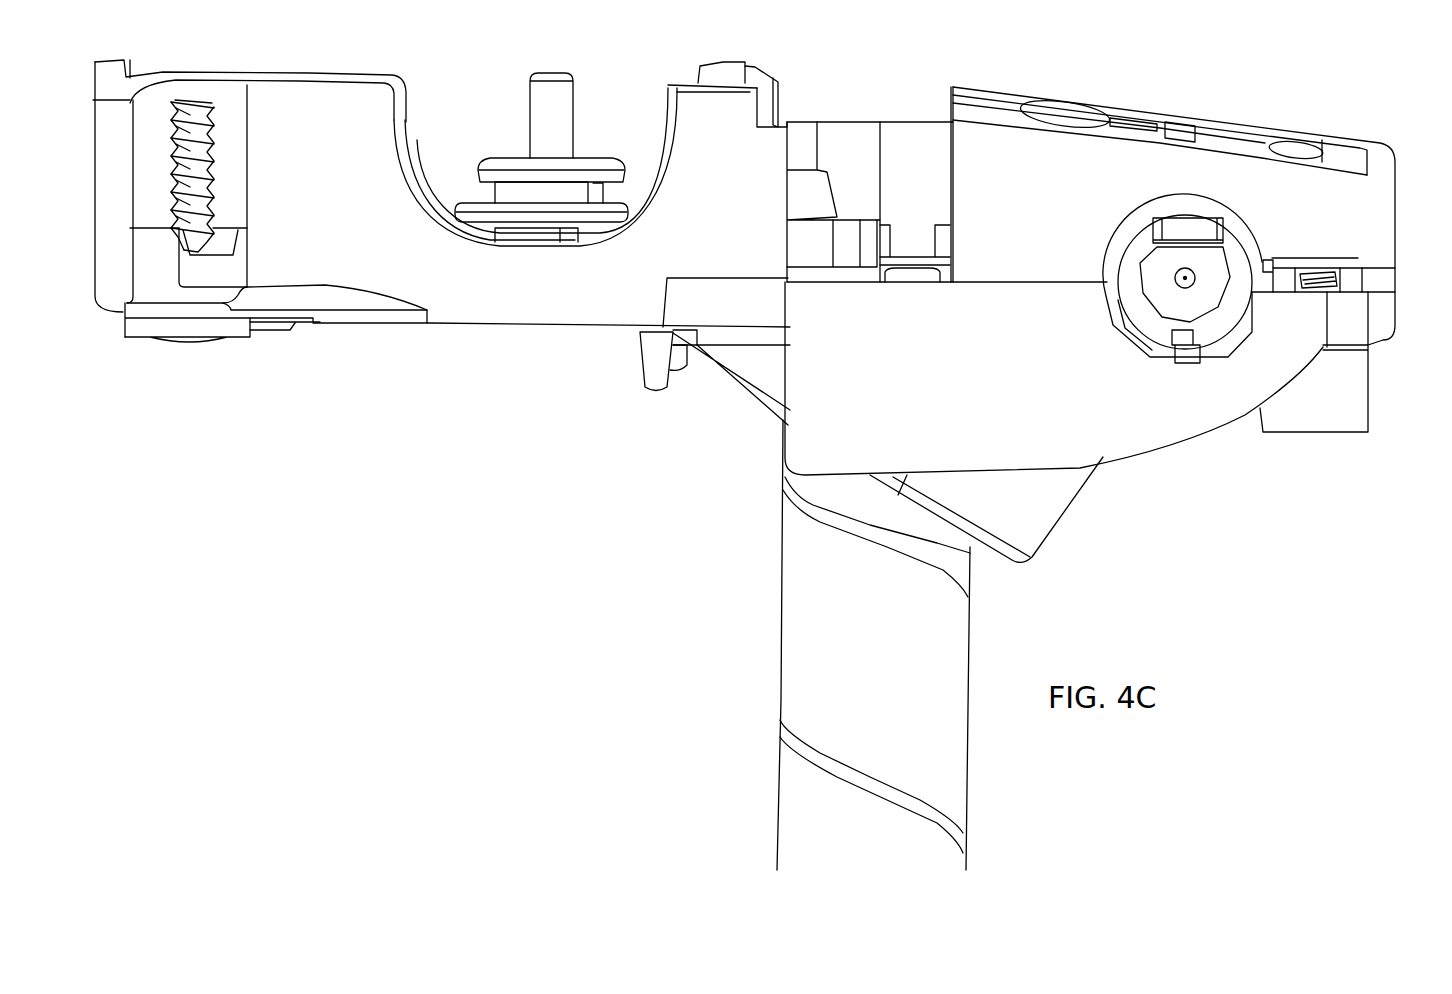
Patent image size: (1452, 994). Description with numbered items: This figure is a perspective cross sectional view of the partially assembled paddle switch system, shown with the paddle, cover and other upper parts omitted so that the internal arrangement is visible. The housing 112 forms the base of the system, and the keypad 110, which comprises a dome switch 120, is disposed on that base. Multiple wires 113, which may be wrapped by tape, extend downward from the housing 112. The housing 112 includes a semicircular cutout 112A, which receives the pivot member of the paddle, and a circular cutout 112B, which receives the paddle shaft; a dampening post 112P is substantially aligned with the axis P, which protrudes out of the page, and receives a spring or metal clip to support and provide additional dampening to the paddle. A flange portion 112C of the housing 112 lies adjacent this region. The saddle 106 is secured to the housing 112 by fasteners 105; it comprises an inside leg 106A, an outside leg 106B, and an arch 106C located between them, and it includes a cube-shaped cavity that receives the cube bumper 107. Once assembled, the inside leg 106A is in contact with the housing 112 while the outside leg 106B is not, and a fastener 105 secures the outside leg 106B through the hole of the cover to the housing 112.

The fastener 105 is at (222, 140).
The saddle 106 is at (1190, 115).
The inside leg 106A is at (1070, 283).
The outside leg 106B is at (1358, 260).
The arch 106C is at (1145, 207).
The cube bumper 107 is at (1207, 230).
The keypad 110 is at (468, 198).
The housing 112 is at (471, 325).
The semicircular cutout 112A is at (1225, 360).
The circular cutout 112B is at (1200, 318).
The plate flange 112C is at (1383, 227).
The dampening post 112P is at (1186, 363).
The wires 113 is at (782, 580).
The dome switch 120 is at (802, 153).
The axis P is at (1177, 274).